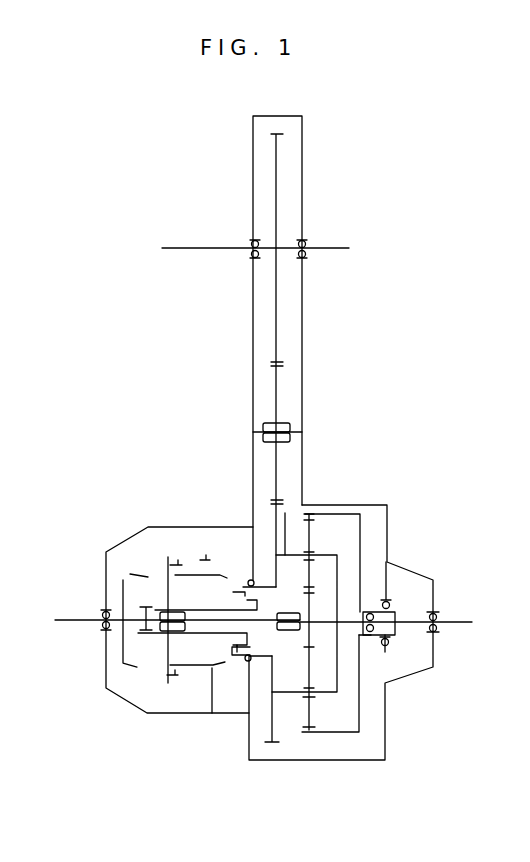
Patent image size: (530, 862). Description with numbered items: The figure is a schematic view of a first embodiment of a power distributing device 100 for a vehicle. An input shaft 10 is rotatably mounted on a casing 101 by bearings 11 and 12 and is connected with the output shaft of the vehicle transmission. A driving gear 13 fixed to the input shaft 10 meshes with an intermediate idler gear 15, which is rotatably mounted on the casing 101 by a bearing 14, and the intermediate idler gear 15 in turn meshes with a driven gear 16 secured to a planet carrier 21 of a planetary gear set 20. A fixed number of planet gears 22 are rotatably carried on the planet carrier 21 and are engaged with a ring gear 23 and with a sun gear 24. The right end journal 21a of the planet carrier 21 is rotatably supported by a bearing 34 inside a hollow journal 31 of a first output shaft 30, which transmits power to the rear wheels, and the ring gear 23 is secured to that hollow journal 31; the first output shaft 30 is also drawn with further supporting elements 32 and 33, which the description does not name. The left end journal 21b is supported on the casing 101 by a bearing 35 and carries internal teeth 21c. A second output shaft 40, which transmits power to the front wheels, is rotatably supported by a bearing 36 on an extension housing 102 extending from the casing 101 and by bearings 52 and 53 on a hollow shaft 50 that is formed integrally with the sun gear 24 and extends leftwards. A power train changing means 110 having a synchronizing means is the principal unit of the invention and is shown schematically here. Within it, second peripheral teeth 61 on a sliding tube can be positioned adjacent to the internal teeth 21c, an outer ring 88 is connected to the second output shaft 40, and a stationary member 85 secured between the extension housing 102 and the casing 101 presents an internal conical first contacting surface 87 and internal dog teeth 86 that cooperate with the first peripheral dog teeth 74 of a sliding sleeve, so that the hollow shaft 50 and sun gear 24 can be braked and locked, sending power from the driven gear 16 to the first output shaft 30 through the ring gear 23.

The input shaft 10 is at (193, 247).
The bearing 11 is at (250, 240).
The bearing 12 is at (308, 243).
The driving gear 13 is at (282, 158).
The bearing 14 is at (290, 428).
The intermediate idler gear 15 is at (277, 389).
The driven gear 16 is at (285, 513).
The planetary gear set 20 is at (352, 498).
The planet carrier 21 is at (305, 503).
The right end journal 21a is at (342, 638).
The left end journal 21b is at (262, 657).
The internal teeth 21c is at (223, 615).
The planet gears 22 is at (310, 540).
The ring gear 23 is at (323, 513).
The sun gear 24 is at (305, 637).
The first output shaft 30 is at (462, 622).
The hollow journal 31 is at (370, 612).
The bearing 32 is at (388, 602).
The bearing 33 is at (433, 612).
The bearing 34 is at (370, 635).
The bearing 35 is at (248, 661).
The bearing 36 is at (103, 627).
The second output shaft 40 is at (73, 619).
The hollow shaft 50 is at (203, 633).
The bearing 52 is at (293, 612).
The bearing 53 is at (158, 637).
The second peripheral teeth 61 is at (255, 648).
The first peripheral dog teeth 74 is at (180, 563).
The stationary member 85 is at (220, 573).
The internal dog teeth 86 is at (206, 555).
The internal conical first contacting surface 87 is at (225, 578).
The outer ring 88 is at (120, 590).
The power distributing device 100 is at (398, 328).
The casing 101 is at (304, 175).
The extension housing 102 is at (127, 538).
The power train changing means 110 is at (157, 556).